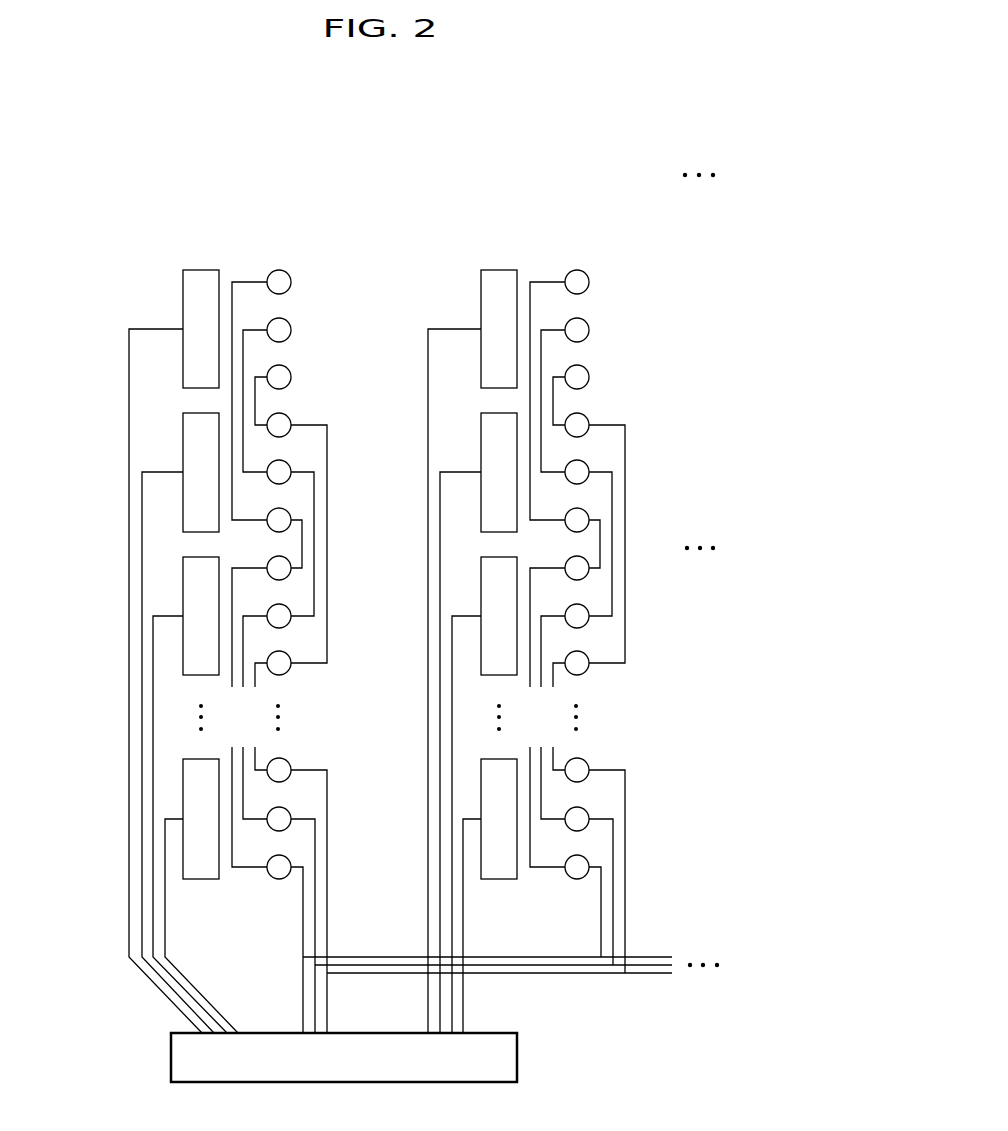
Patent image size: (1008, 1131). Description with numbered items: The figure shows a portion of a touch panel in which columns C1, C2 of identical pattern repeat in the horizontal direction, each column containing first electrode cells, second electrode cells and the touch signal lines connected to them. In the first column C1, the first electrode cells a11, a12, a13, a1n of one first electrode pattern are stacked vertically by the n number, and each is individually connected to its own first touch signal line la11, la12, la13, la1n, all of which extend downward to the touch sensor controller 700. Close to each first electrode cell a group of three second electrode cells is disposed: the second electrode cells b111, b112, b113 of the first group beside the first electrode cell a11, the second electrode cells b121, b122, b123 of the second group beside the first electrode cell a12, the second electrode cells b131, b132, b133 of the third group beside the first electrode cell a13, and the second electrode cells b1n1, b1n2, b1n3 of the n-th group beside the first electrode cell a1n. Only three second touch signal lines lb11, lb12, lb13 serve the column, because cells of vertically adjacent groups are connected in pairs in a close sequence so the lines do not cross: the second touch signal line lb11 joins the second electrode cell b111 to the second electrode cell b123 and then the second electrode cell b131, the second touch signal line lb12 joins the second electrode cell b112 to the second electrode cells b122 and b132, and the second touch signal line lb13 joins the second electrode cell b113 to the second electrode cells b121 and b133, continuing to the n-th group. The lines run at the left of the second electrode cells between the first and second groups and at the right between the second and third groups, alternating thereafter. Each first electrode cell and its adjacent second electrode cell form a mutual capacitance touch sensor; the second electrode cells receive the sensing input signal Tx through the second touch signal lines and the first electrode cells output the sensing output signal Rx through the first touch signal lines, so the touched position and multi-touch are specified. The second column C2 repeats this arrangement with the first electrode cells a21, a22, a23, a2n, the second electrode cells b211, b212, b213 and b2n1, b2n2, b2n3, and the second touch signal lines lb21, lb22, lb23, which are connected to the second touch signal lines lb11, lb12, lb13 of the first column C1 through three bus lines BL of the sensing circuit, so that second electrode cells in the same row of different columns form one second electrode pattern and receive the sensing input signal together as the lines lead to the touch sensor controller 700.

The touch sensor controller 700 is at (517, 1062).
The first column C1 is at (142, 200).
The second column C2 is at (427, 200).
The bus lines BL is at (720, 940).
The first touch signal line la11 is at (129, 360).
The first touch signal line la12 is at (142, 503).
The first touch signal line la13 is at (153, 648).
The first touch signal line la1n is at (165, 850).
The first electrode cell a11 is at (201, 329).
The first electrode cell a12 is at (201, 472).
The first electrode cell a13 is at (201, 616).
The first electrode cell a1n is at (201, 819).
The first electrode cell a21 is at (499, 329).
The first electrode cell a22 is at (499, 472).
The first electrode cell a23 is at (499, 616).
The first electrode cell a2n is at (499, 819).
The second touch signal line lb11 is at (246, 282).
The second touch signal line lb12 is at (243, 350).
The second touch signal line lb13 is at (255, 400).
The second touch signal line lb21 is at (544, 282).
The second touch signal line lb22 is at (541, 350).
The second touch signal line lb23 is at (553, 400).
The second electrode cell b111 is at (291, 282).
The second electrode cell b112 is at (291, 330).
The second electrode cell b113 is at (291, 377).
The second electrode cell b121 is at (268, 436).
The second electrode cell b122 is at (289, 480).
The second electrode cell b123 is at (289, 528).
The second electrode cell b131 is at (289, 576).
The second electrode cell b132 is at (289, 624).
The second electrode cell b133 is at (289, 671).
The second electrode cell b1n1 is at (289, 764).
The second electrode cell b1n2 is at (289, 813).
The second electrode cell b1n3 is at (289, 861).
The second electrode cell b211 is at (589, 282).
The second electrode cell b212 is at (589, 330).
The second electrode cell b213 is at (589, 377).
The second electrode cell b2n1 is at (587, 764).
The second electrode cell b2n2 is at (587, 813).
The second electrode cell b2n3 is at (587, 861).